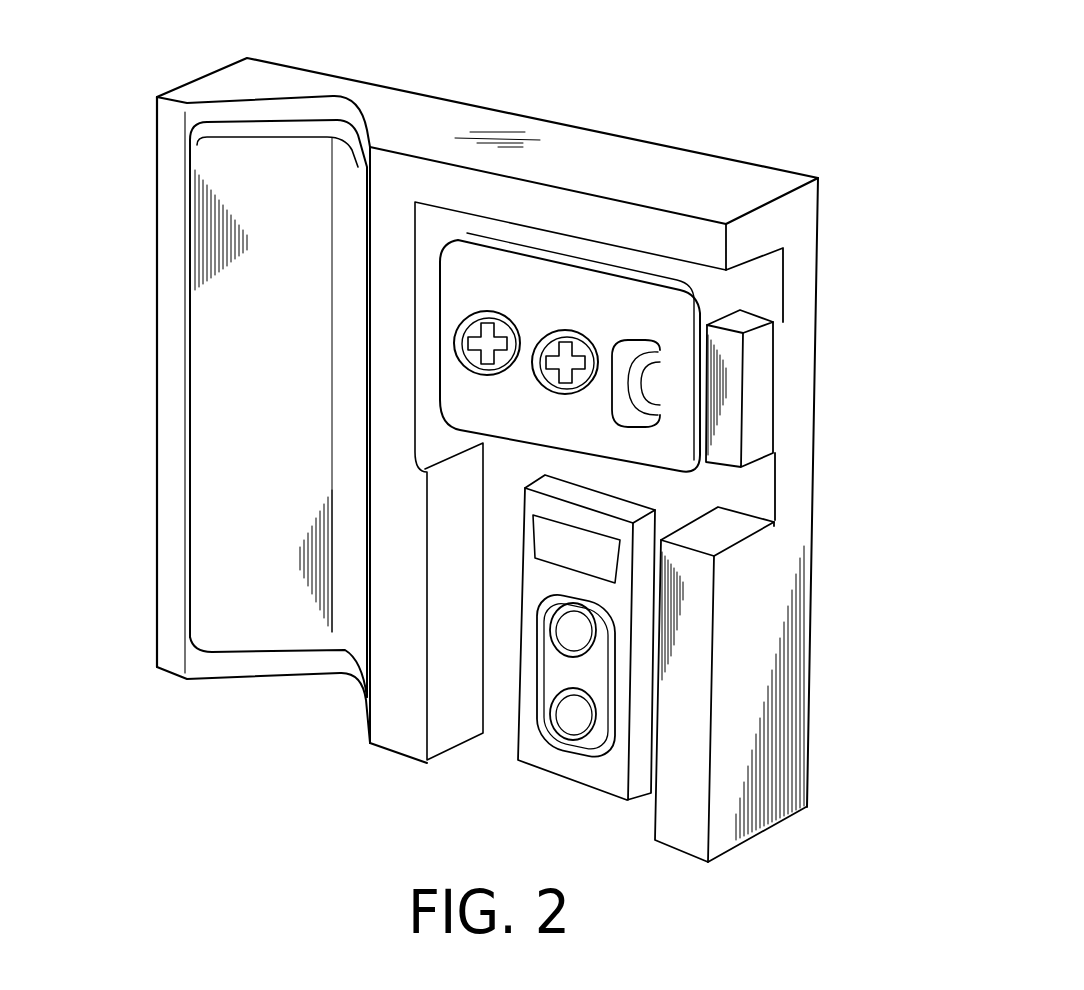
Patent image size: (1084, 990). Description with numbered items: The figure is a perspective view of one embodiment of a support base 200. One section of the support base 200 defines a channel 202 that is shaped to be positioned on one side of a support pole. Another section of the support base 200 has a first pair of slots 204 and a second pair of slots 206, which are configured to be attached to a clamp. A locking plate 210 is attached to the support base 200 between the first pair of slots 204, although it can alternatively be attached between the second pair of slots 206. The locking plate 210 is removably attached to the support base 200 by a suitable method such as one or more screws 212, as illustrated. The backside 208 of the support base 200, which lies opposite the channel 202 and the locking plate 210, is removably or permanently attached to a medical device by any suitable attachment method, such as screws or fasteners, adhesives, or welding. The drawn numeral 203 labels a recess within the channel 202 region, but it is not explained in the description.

The battery pack housing 200 is at (744, 172).
The frame portion 202 is at (200, 112).
The recess in frame 203 is at (203, 453).
The latching projections 204 is at (750, 488).
The keypad panel 206 is at (650, 790).
The side wall 208 is at (785, 228).
The terminal plate 210 is at (675, 325).
The screws 212 is at (549, 313).